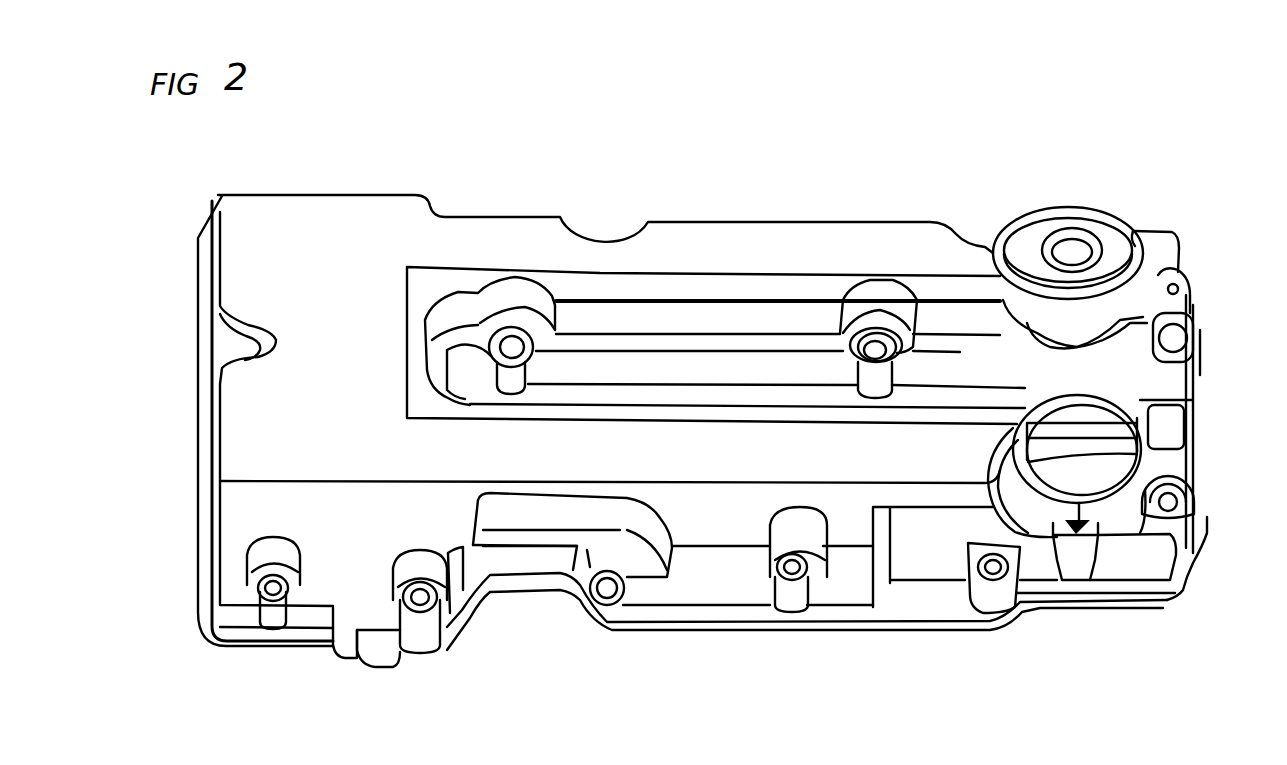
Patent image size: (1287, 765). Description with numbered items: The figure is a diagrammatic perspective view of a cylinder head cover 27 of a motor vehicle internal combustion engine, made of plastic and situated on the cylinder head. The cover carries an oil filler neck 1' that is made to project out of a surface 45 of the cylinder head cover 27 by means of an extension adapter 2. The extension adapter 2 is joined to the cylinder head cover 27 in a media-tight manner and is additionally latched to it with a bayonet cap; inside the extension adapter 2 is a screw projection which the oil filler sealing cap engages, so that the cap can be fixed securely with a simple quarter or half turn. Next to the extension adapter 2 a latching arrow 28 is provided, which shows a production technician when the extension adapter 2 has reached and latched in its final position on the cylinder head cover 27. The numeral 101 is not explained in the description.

The surface 45 is at (765, 243).
The cylinder head cover 27 is at (1193, 229).
The oil filler neck 1' is at (1143, 416).
The collar 101 is at (1186, 450).
The latching arrow 28 is at (1050, 510).
The extension adapter 2 is at (1103, 510).